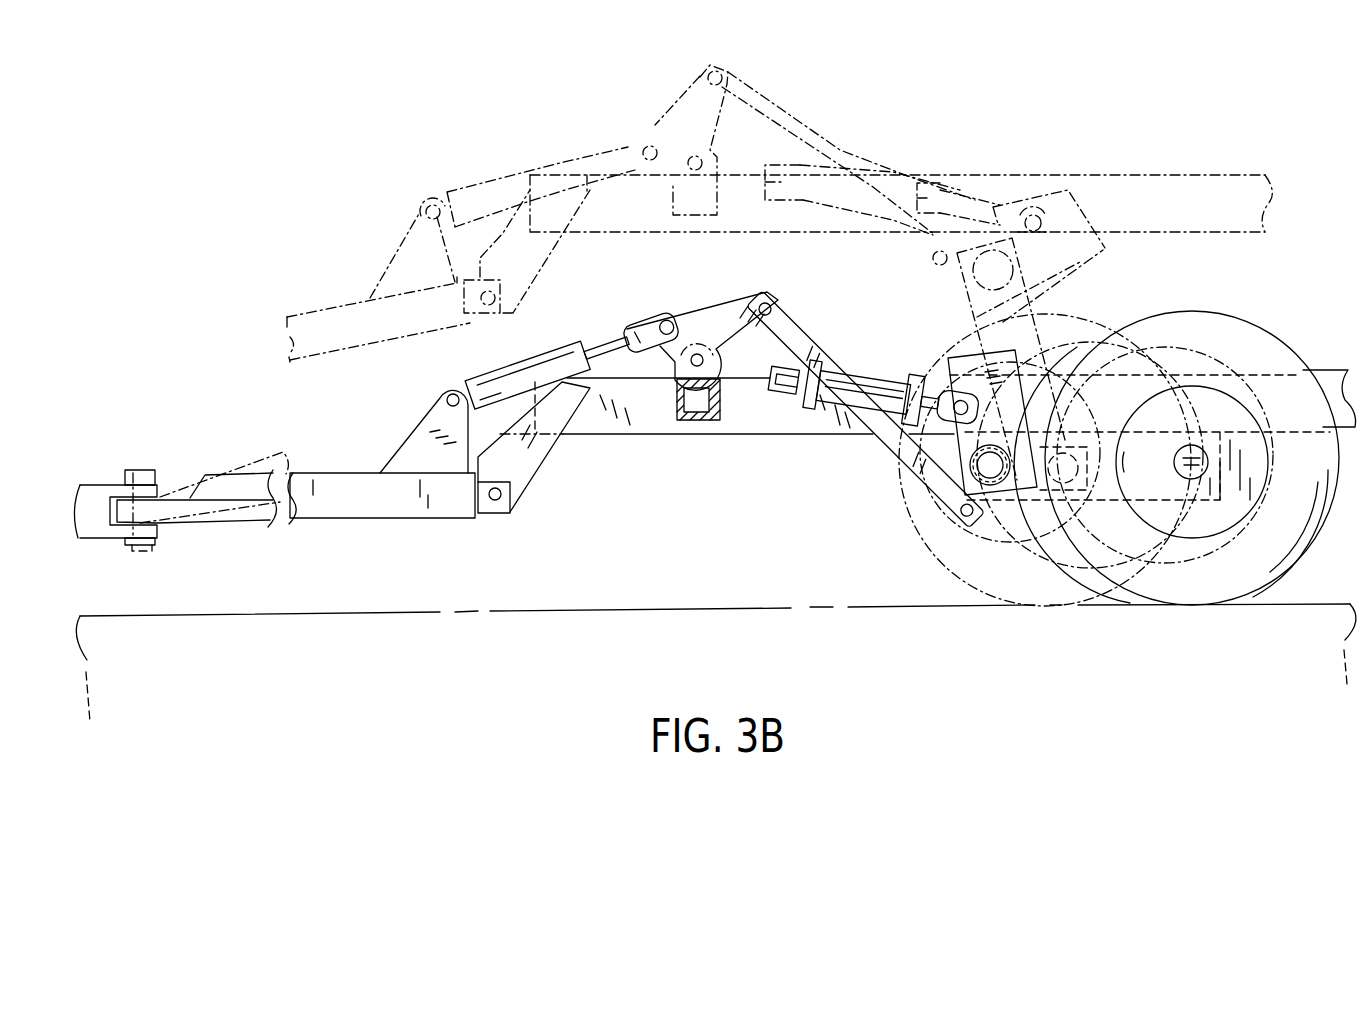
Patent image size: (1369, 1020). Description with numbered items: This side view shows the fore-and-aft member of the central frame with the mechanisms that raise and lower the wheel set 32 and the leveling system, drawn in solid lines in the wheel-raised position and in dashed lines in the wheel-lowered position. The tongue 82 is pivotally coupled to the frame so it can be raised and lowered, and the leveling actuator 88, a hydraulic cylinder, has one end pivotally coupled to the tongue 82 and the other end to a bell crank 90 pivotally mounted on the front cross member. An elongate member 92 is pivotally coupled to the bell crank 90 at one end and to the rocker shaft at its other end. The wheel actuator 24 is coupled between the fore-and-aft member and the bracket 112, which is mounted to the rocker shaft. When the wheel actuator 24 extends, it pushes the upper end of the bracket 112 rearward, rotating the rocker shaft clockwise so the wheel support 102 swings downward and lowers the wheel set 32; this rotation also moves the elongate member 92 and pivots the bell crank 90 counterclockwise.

The wheel actuator 24 is at (865, 367).
The wheel set 32 is at (1190, 311).
The tongue 82 is at (380, 518).
The leveling actuator 88 is at (523, 366).
The bell crank 90 is at (723, 306).
The elongate member 92 is at (793, 320).
The wheel support 102 is at (1157, 538).
The bracket 112 is at (1020, 360).